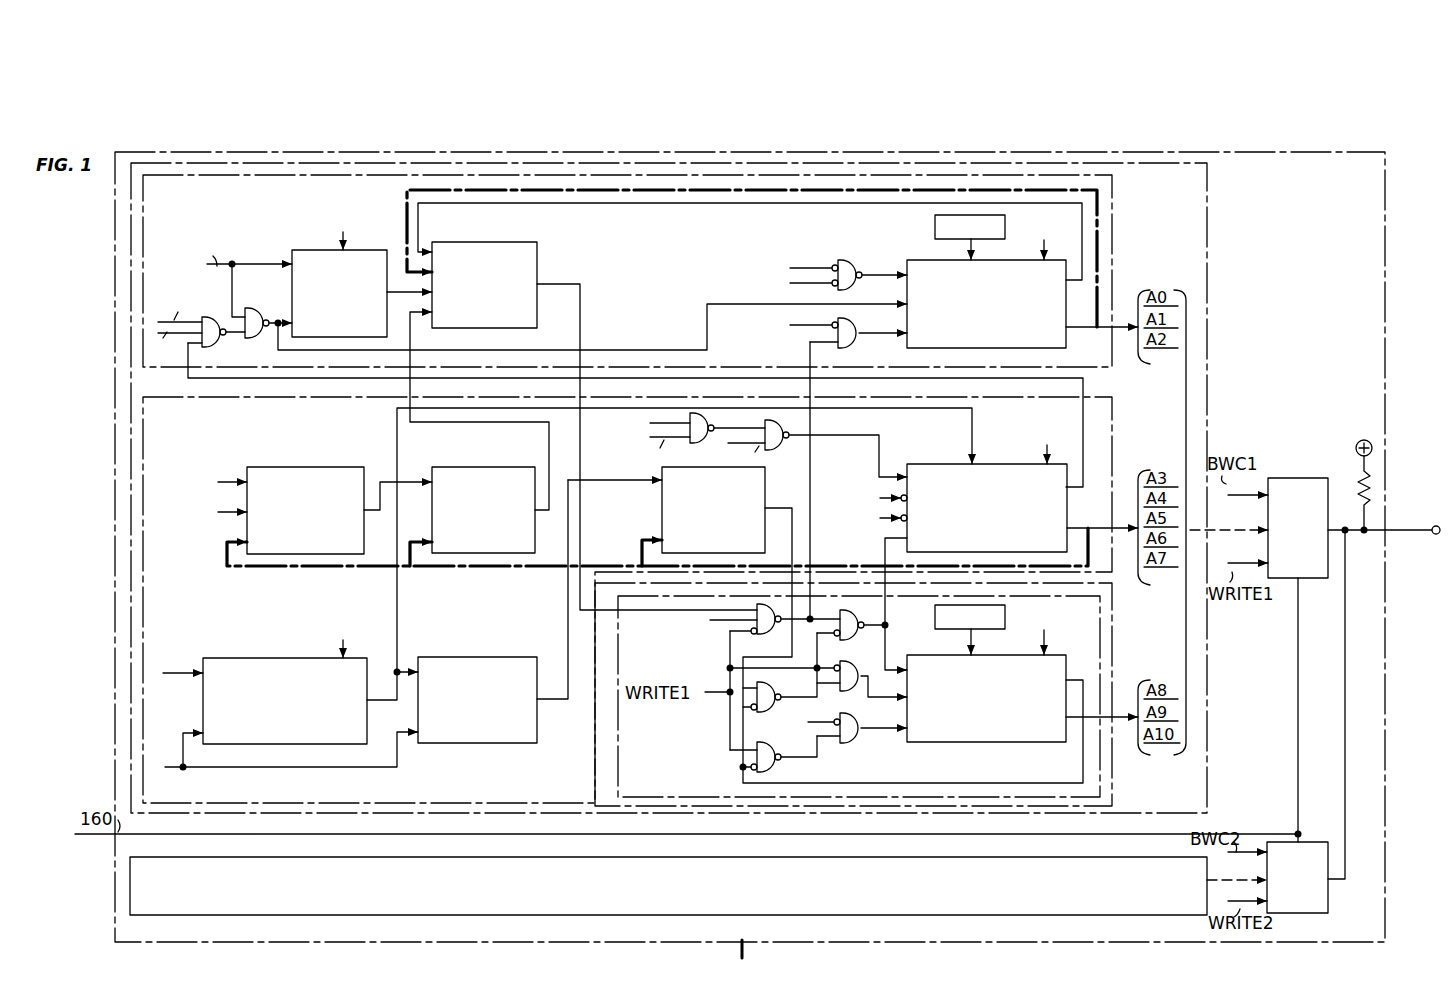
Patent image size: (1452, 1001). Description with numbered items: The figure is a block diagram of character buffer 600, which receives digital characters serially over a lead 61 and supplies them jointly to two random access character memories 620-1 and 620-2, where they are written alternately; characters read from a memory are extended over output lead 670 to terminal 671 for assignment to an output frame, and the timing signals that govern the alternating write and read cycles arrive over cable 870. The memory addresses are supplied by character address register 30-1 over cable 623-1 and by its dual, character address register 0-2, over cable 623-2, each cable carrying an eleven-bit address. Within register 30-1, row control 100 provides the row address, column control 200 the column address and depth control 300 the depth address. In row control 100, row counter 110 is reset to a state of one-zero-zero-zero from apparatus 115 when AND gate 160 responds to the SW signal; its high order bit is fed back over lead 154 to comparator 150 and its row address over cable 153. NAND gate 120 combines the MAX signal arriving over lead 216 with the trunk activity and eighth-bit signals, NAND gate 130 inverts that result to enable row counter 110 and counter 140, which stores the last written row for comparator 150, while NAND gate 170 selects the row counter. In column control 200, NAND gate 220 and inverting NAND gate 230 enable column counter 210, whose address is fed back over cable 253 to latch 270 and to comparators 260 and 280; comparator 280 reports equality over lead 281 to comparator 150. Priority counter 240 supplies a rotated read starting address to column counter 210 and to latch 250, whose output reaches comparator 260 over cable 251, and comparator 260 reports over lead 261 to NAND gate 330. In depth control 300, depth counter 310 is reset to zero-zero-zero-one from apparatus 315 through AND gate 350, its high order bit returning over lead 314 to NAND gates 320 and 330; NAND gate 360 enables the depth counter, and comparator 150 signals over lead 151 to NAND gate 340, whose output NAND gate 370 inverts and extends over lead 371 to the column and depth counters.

The character buffer 600 is at (1385, 188).
The character address register 30-1 is at (131, 452).
The row control 100 is at (1112, 250).
The column control 200 is at (1112, 410).
The depth control 300 is at (1112, 620).
The row counter 110 is at (1068, 348).
The apparatus 115 is at (935, 228).
The NAND gate 120 is at (218, 348).
The NAND gate 130 is at (264, 310).
The counter 140 is at (288, 259).
The comparator 150 is at (497, 242).
The lead 151 is at (551, 284).
The cable 153 is at (407, 192).
The lead 154 is at (418, 225).
The AND gate 160 is at (850, 348).
The NAND gate 170 is at (864, 250).
The column counter 210 is at (923, 464).
The lead 216 is at (1083, 384).
The NAND gate 220 is at (716, 406).
The NAND gate 230 is at (786, 448).
The priority rotation counter 240 is at (238, 658).
The latch 250 is at (457, 657).
The cable 251 is at (568, 605).
The cable 253 is at (1075, 528).
The comparator 260 is at (662, 510).
The lead 261 is at (798, 490).
The latch 270 is at (283, 467).
The comparator 280 is at (452, 467).
The lead 281 is at (549, 440).
The depth counter 310 is at (1000, 742).
The lead 314 is at (960, 772).
The apparatus 315 is at (935, 623).
The NAND gate 320 is at (772, 772).
The NAND gate 330 is at (784, 676).
The NAND gate 340 is at (776, 642).
The AND gate 350 is at (851, 743).
The NAND gate 360 is at (851, 691).
The NAND gate 370 is at (852, 640).
The lead 371 is at (885, 550).
The character memory 620-1 is at (1290, 478).
The character memory 620-2 is at (1312, 918).
The cable 623-1 is at (1257, 508).
The cable 623-2 is at (1254, 892).
The output lead 670 is at (1398, 493).
The terminal 671 is at (1432, 532).
The lead 61 is at (93, 857).
The character address register 0-2 is at (130, 881).
The cable 870 is at (745, 950).